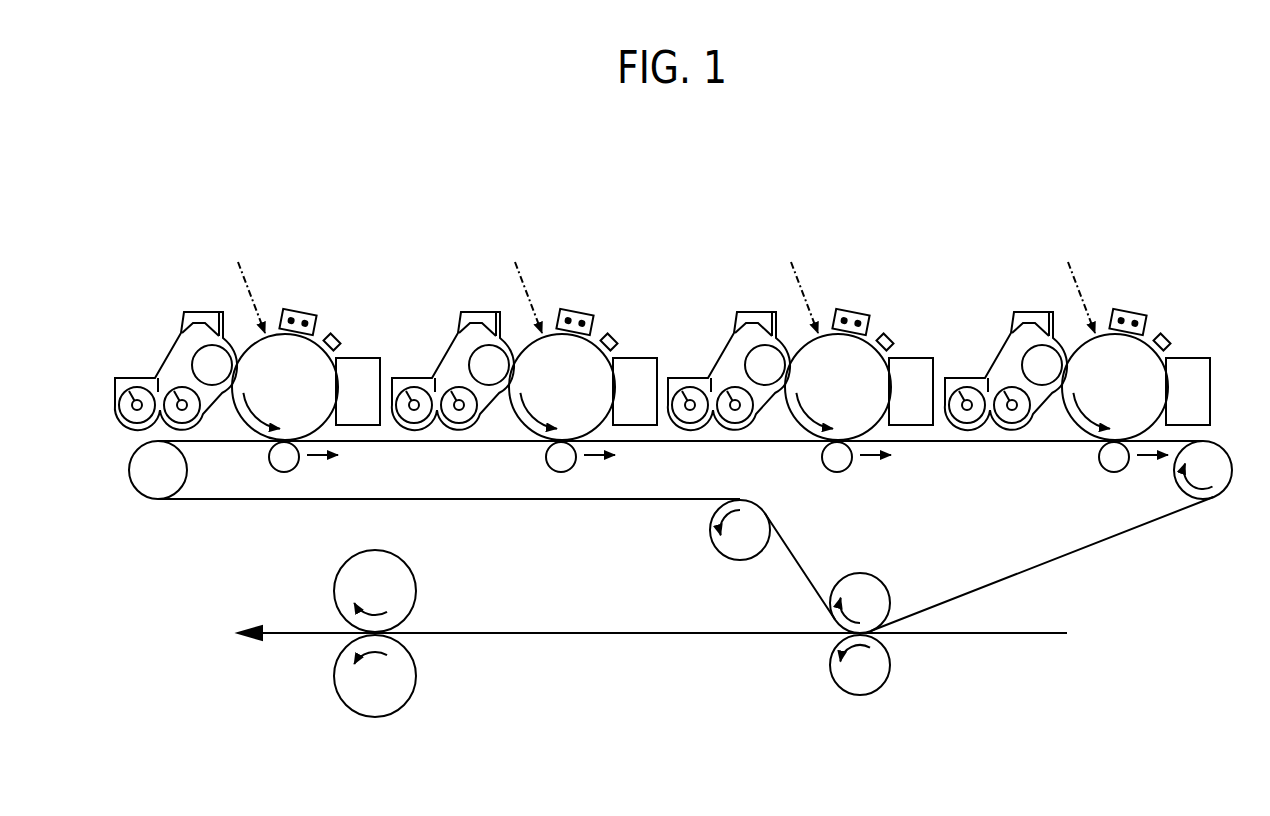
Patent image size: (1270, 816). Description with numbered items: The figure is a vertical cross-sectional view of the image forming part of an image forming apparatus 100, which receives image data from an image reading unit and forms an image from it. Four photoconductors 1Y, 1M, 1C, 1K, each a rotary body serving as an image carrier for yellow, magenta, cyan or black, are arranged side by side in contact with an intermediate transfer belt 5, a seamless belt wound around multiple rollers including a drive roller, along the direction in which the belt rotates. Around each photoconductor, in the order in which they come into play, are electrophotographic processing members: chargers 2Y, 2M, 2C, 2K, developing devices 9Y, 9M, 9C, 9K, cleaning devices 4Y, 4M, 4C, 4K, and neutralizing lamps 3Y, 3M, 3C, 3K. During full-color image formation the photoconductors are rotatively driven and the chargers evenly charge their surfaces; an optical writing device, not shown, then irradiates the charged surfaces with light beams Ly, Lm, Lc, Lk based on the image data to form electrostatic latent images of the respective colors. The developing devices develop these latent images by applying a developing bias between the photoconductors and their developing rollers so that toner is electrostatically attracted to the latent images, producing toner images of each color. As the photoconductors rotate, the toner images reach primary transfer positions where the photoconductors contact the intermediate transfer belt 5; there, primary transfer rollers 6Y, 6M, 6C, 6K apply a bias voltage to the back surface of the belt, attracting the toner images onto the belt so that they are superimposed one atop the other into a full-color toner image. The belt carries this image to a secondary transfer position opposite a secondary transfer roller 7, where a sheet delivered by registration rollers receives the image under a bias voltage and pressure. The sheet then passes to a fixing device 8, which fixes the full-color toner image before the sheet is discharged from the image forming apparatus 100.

The image forming apparatus 100 is at (1128, 201).
The photoconductor 1Y is at (296, 397).
The photoconductor 1M is at (562, 387).
The photoconductor 1C is at (838, 387).
The photoconductor 1K is at (1115, 387).
The charger 2Y is at (299, 311).
The charger 2M is at (583, 301).
The charger 2C is at (857, 301).
The charger 2K is at (1134, 301).
The neutralizing lamp 3Y is at (331, 334).
The neutralizing lamp 3M is at (622, 320).
The neutralizing lamp 3C is at (896, 320).
The neutralizing lamp 3K is at (1173, 320).
The cleaning device 4Y is at (362, 358).
The cleaning device 4M is at (642, 369).
The cleaning device 4C is at (916, 369).
The cleaning device 4K is at (1193, 369).
The primary transfer roller 6Y is at (269, 461).
The primary transfer roller 6M is at (559, 462).
The primary transfer roller 6C is at (835, 462).
The primary transfer roller 6K is at (1112, 462).
The developing device 9Y is at (200, 311).
The developing device 9M is at (453, 348).
The developing device 9C is at (729, 348).
The developing device 9K is at (1006, 348).
The light beam Ly is at (240, 268).
The light beam Lm is at (540, 285).
The light beam Lc is at (811, 285).
The light beam Lk is at (1089, 285).
The intermediate transfer belt 5 is at (1085, 549).
The secondary transfer roller 7 is at (886, 686).
The fixing device 8 is at (434, 677).